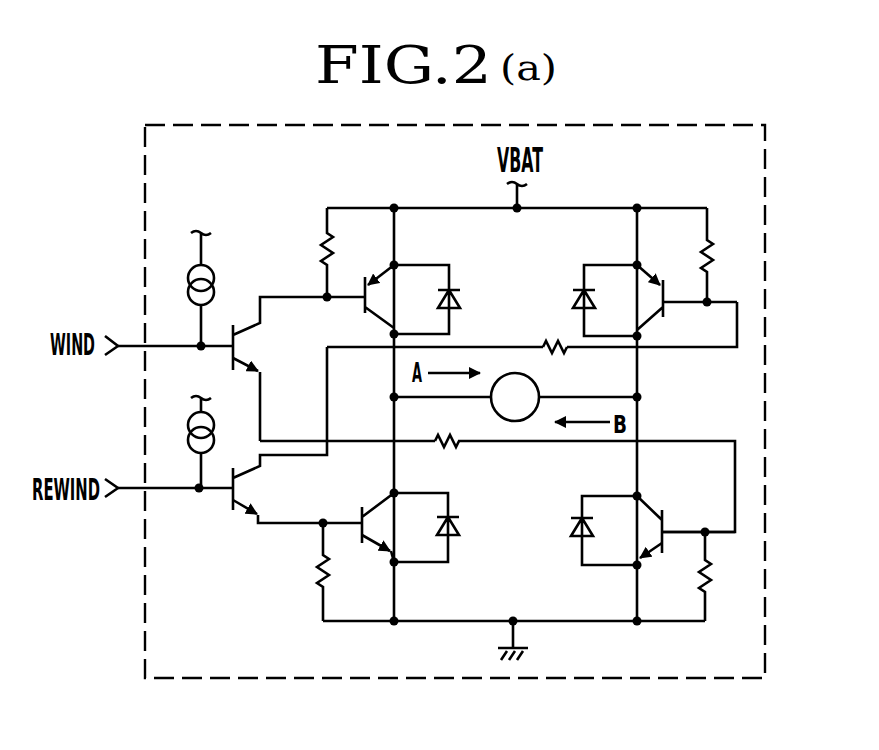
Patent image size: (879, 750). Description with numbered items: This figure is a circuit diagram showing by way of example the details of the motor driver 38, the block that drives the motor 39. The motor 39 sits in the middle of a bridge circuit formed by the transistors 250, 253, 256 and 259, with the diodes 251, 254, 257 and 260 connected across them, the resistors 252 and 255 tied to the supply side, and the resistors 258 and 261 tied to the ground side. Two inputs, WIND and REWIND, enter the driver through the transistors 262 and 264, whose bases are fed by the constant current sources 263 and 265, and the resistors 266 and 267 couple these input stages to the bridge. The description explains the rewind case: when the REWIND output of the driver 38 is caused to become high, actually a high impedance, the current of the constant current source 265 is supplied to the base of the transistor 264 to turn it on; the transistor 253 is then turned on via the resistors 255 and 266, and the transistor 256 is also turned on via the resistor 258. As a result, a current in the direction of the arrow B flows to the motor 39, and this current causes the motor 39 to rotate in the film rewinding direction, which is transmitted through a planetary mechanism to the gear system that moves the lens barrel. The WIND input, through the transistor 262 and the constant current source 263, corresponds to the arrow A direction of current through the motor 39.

The motor driver 38 is at (766, 170).
The motor 39 is at (503, 421).
The transistor 250 is at (370, 274).
The diode 251 is at (464, 293).
The resistor 252 is at (316, 250).
The transistor 253 is at (655, 278).
The diode 254 is at (569, 297).
The resistor 255 is at (717, 248).
The transistor 256 is at (373, 503).
The diode 257 is at (460, 528).
The resistor 258 is at (313, 565).
The transistor 259 is at (650, 510).
The diode 260 is at (570, 530).
The resistor 261 is at (718, 572).
The transistor 262 is at (247, 343).
The constant current source 263 is at (184, 272).
The transistor 264 is at (240, 515).
The constant current source 265 is at (181, 428).
The resistor 266 is at (553, 363).
The resistor 267 is at (448, 452).